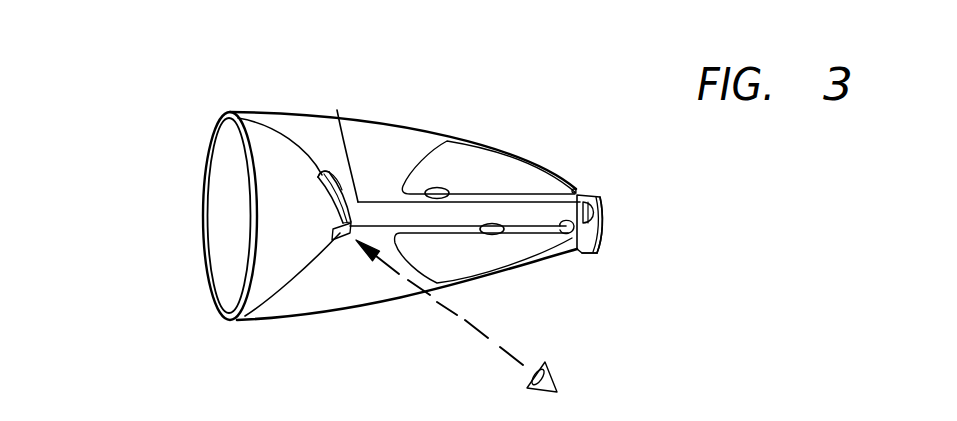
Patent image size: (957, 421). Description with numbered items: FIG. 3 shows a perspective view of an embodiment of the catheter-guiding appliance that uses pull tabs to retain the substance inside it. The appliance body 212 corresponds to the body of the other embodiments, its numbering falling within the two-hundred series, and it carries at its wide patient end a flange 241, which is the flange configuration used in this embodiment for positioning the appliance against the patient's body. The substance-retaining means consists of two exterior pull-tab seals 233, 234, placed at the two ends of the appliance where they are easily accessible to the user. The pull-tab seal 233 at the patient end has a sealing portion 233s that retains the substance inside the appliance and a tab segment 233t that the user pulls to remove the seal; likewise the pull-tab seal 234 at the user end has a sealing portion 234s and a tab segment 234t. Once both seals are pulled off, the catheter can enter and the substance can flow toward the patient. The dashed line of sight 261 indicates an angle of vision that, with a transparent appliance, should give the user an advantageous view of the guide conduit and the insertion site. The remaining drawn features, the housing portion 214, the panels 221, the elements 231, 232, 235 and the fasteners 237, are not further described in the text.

The appliance body 212 is at (220, 218).
The housing 214 is at (393, 135).
The leaf-shaped panel 221 is at (505, 165).
The hook 231 is at (553, 231).
The loop 232 is at (583, 208).
The pull-tab seal 233 is at (343, 240).
The tab segment 233t is at (322, 186).
The sealing portion 233s is at (340, 213).
The pull-tab seal 234 is at (602, 198).
The sealing portion 234s is at (604, 208).
The tab segment 234t is at (601, 252).
The neck 235 is at (337, 110).
The fastener 237 is at (436, 192).
The flange 241 is at (270, 127).
The line of sight 261 is at (473, 326).